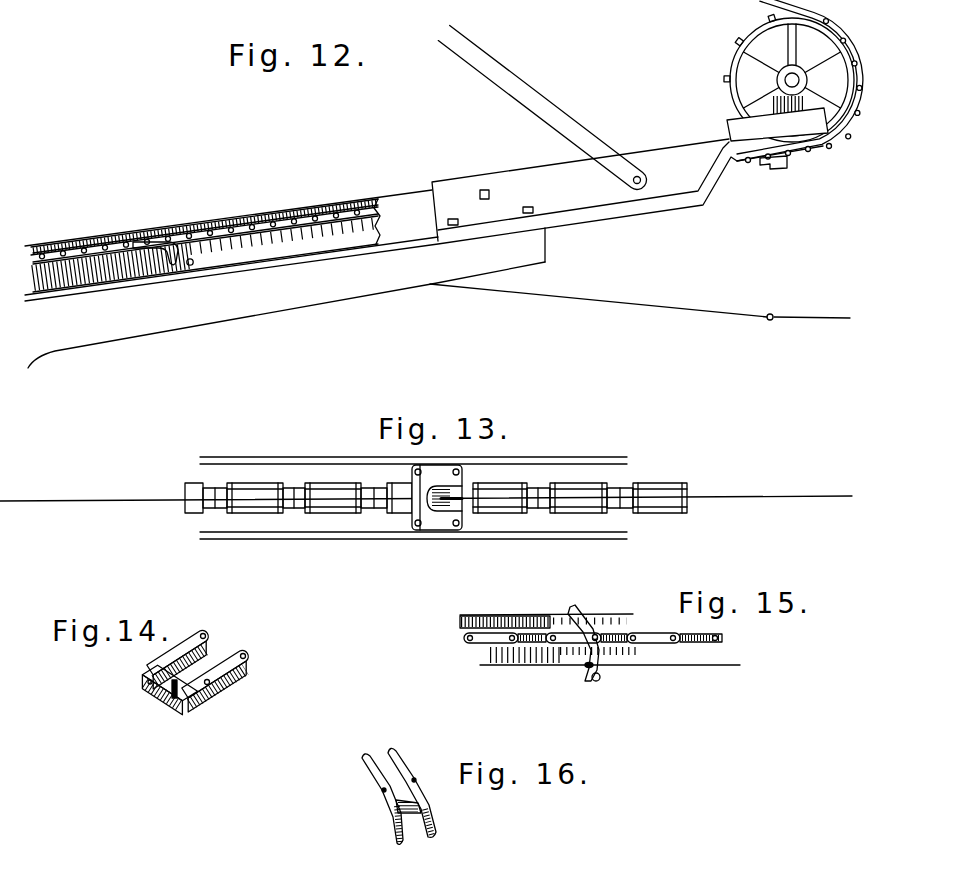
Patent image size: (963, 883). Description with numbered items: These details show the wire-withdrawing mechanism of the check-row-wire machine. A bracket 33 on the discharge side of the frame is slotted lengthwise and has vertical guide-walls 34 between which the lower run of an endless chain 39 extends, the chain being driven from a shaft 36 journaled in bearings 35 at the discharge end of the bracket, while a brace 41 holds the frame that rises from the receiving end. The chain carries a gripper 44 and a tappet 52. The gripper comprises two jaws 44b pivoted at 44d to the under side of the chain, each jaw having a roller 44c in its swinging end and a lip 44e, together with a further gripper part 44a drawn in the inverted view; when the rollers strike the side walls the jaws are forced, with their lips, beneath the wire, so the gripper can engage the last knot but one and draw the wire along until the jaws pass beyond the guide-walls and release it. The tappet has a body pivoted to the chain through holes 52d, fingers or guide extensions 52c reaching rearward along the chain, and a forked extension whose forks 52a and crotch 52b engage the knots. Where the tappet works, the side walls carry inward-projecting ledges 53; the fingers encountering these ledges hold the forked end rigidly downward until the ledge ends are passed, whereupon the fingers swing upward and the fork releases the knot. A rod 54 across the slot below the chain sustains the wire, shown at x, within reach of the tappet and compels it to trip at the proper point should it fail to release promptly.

In FIG. 12, the bracket 33 is at (286, 315).
In FIG. 12, the vertical guide-walls 34 is at (214, 223).
In FIG. 13, the vertical guide-walls 34 is at (413, 501).
In FIG. 12, the bearings 35 is at (777, 124).
In FIG. 12, the shaft 36 is at (785, 80).
In FIG. 12, the endless chain 39 is at (302, 217).
In FIG. 13, the endless chain 39 is at (192, 490).
In FIG. 15, the endless chain 39 is at (484, 642).
In FIG. 12, the brace 41 is at (542, 107).
In FIG. 12, the gripper 44 is at (777, 169).
In FIG. 13, the finger 44a is at (465, 512).
In FIG. 13, the jaws 44b is at (448, 506).
In FIG. 14, the jaws 44b is at (170, 668).
In FIG. 13, the roller 44c is at (417, 468).
In FIG. 14, the roller 44c is at (181, 702).
In FIG. 13, the pivot 44d is at (460, 474).
In FIG. 14, the pivot 44d is at (148, 683).
In FIG. 14, the lip 44e is at (177, 699).
In FIG. 12, the tappet 52 is at (153, 240).
In FIG. 15, the tappet 52 is at (597, 624).
In FIG. 16, the tappet 52 is at (399, 799).
In FIG. 16, the forks 52a is at (434, 823).
In FIG. 16, the crotch 52b is at (412, 838).
In FIG. 16, the fingers or guide extensions 52c is at (361, 766).
In FIG. 16, the holes 52d is at (416, 780).
In FIG. 12, the ledges or guideways 53 is at (89, 242).
In FIG. 15, the ledges or guideways 53 is at (546, 612).
In FIG. 12, the rod 54 is at (189, 265).
In FIG. 15, the rod 54 is at (599, 681).
In FIG. 12, the reference line x is at (640, 302).
In FIG. 13, the reference line x is at (426, 487).
In FIG. 15, the reference line x is at (610, 678).